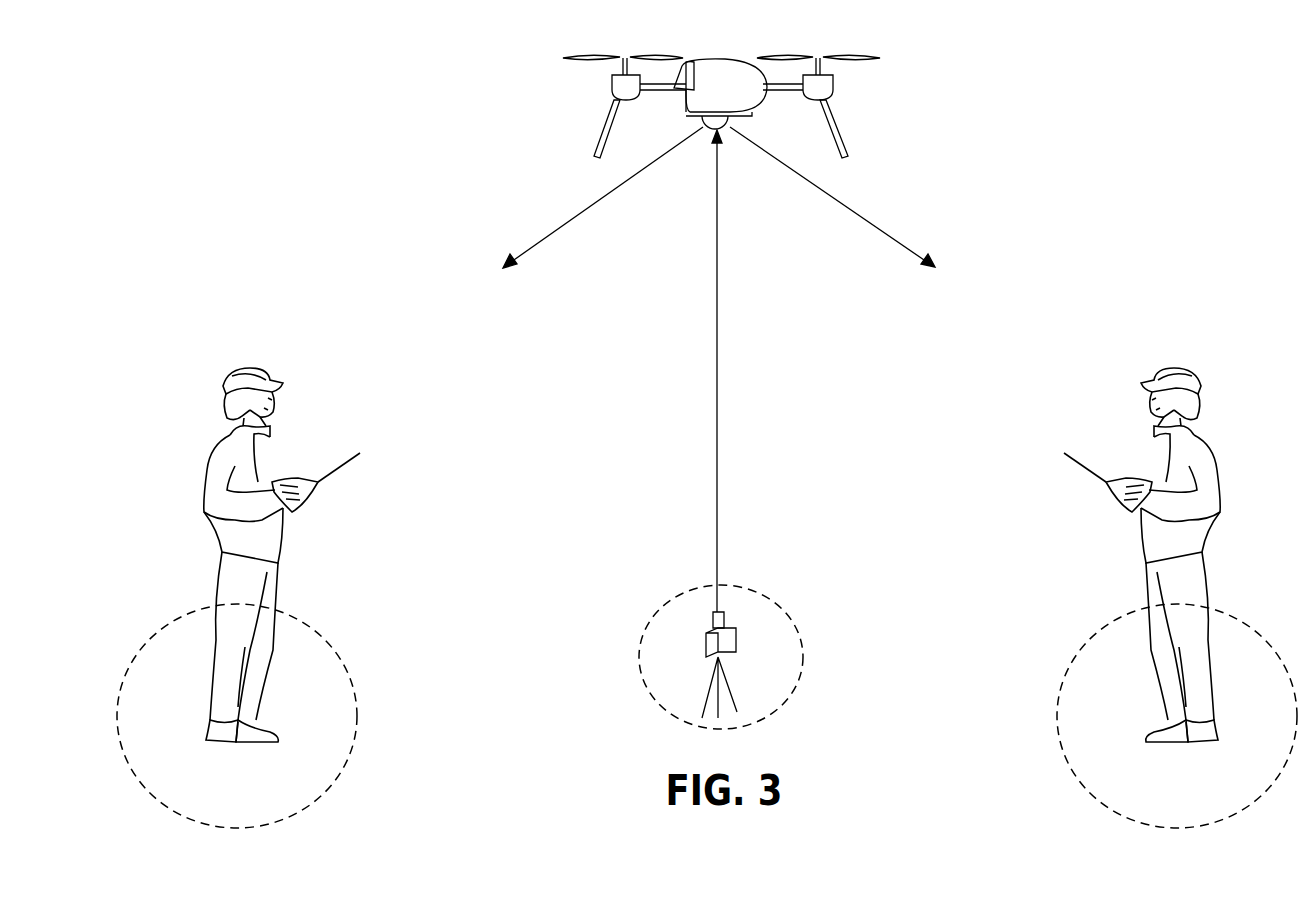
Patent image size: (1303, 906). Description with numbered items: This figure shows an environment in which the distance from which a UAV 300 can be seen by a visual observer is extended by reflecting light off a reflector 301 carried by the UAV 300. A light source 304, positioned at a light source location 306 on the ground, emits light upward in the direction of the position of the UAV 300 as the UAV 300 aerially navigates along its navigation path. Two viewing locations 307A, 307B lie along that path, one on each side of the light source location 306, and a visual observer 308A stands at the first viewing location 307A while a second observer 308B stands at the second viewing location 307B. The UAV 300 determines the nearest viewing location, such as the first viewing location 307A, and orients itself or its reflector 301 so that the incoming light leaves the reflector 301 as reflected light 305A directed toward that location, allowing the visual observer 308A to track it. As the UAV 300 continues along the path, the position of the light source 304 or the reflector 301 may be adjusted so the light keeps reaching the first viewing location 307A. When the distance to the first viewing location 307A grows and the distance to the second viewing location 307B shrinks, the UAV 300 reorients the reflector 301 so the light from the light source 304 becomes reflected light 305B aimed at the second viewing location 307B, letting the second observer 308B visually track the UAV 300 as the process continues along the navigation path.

The UAV 300 is at (848, 53).
The reflector 301 is at (737, 122).
The light source 304 is at (713, 613).
The reflected light 305A is at (542, 244).
The reflected light 305B is at (907, 244).
The light source location 306 is at (785, 703).
The first viewing location 307A is at (355, 687).
The second viewing location 307B is at (1060, 687).
The visual observer 308A is at (254, 583).
The second observer 308B is at (1166, 583).